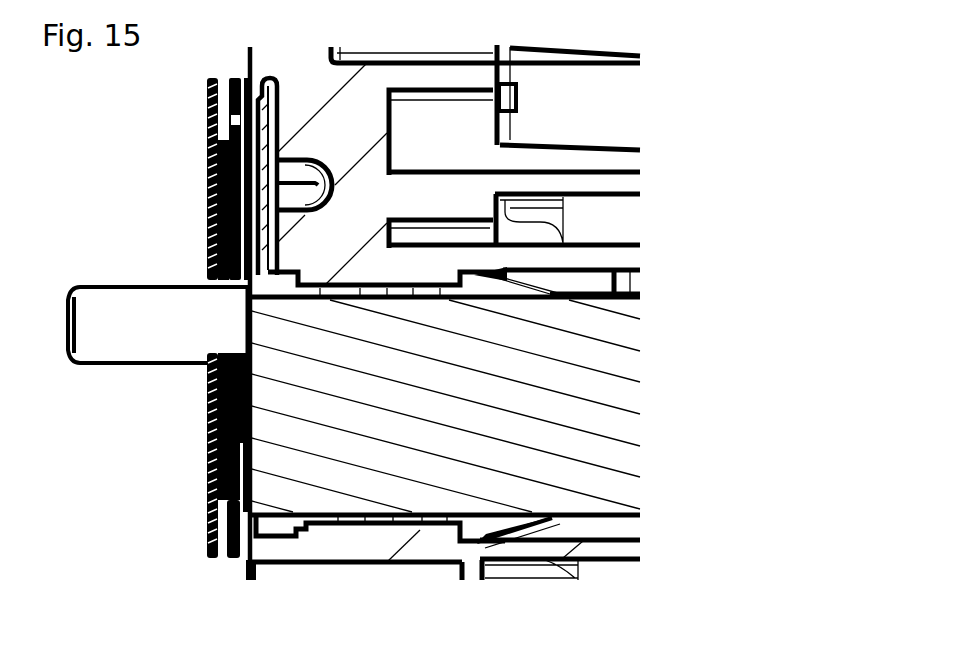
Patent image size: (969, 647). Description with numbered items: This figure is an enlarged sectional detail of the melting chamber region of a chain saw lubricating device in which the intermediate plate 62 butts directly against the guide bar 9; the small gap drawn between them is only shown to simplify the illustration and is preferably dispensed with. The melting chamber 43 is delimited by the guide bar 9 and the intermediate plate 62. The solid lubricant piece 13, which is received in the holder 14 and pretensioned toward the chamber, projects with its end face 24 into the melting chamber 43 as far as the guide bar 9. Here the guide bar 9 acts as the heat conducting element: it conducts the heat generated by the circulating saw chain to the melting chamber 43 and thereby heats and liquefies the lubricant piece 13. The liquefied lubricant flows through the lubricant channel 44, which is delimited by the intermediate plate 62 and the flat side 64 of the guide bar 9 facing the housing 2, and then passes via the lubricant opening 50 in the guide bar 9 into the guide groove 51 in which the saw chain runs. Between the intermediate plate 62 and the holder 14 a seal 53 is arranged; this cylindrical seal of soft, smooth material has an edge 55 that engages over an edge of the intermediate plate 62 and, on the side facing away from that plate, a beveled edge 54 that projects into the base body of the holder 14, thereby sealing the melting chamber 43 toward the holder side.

The housing 2 is at (373, 78).
The guide bar 9 is at (208, 180).
The lubricant piece 13 is at (625, 330).
The holder 14 is at (604, 542).
The end face 24 is at (208, 480).
The melting chamber 43 is at (230, 513).
The lubricant channel 44 is at (253, 212).
The lubricant opening 50 is at (235, 120).
The guide groove 51 is at (227, 97).
The seal 53 is at (432, 88).
The edge 54 is at (488, 547).
The edge 55 is at (277, 540).
The intermediate plate 62 is at (272, 155).
The flat side 64 is at (247, 78).